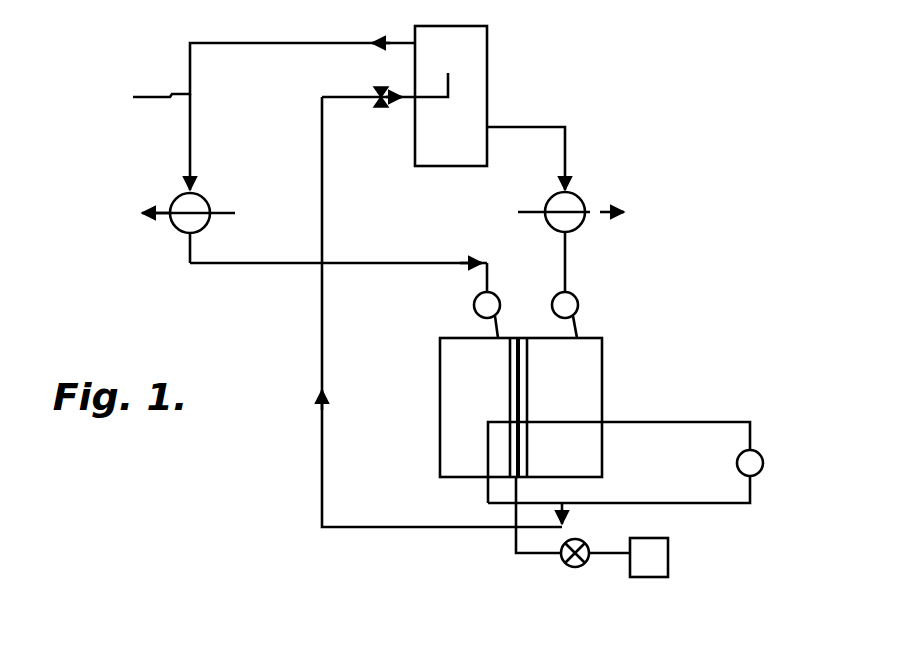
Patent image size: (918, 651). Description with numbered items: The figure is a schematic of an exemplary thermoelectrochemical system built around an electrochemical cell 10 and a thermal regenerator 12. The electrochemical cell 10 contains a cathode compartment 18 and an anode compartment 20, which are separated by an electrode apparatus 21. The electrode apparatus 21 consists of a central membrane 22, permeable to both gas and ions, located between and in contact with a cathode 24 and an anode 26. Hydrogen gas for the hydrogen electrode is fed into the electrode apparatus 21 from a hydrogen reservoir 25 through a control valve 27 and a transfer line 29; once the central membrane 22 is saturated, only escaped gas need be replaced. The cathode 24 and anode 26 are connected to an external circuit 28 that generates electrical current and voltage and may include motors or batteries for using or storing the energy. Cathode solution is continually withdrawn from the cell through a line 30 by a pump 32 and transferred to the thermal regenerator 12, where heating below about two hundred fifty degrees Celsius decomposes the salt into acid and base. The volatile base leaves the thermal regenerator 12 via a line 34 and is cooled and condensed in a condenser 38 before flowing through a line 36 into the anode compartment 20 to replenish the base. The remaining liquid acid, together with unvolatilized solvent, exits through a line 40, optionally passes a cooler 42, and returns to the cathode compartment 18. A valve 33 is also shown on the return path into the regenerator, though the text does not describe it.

The electrochemical cell 10 is at (602, 383).
The thermal regenerator 12 is at (487, 43).
The cathode compartment 18 is at (602, 458).
The anode compartment 20 is at (447, 458).
The electrode apparatus 21 is at (492, 364).
The central membrane 22 is at (519, 338).
The cathode 24 is at (530, 375).
The hydrogen reservoir 25 is at (668, 565).
The anode 26 is at (510, 403).
The control valve 27 is at (575, 568).
The external circuit 28 is at (750, 432).
The transfer line 29 is at (516, 548).
The line 30 is at (322, 478).
The pump 32 is at (478, 303).
The valve 33 is at (375, 90).
The line 34 is at (256, 116).
The line 36 is at (262, 265).
The condenser 38 is at (177, 228).
The line 40 is at (553, 127).
The cooler 42 is at (572, 197).